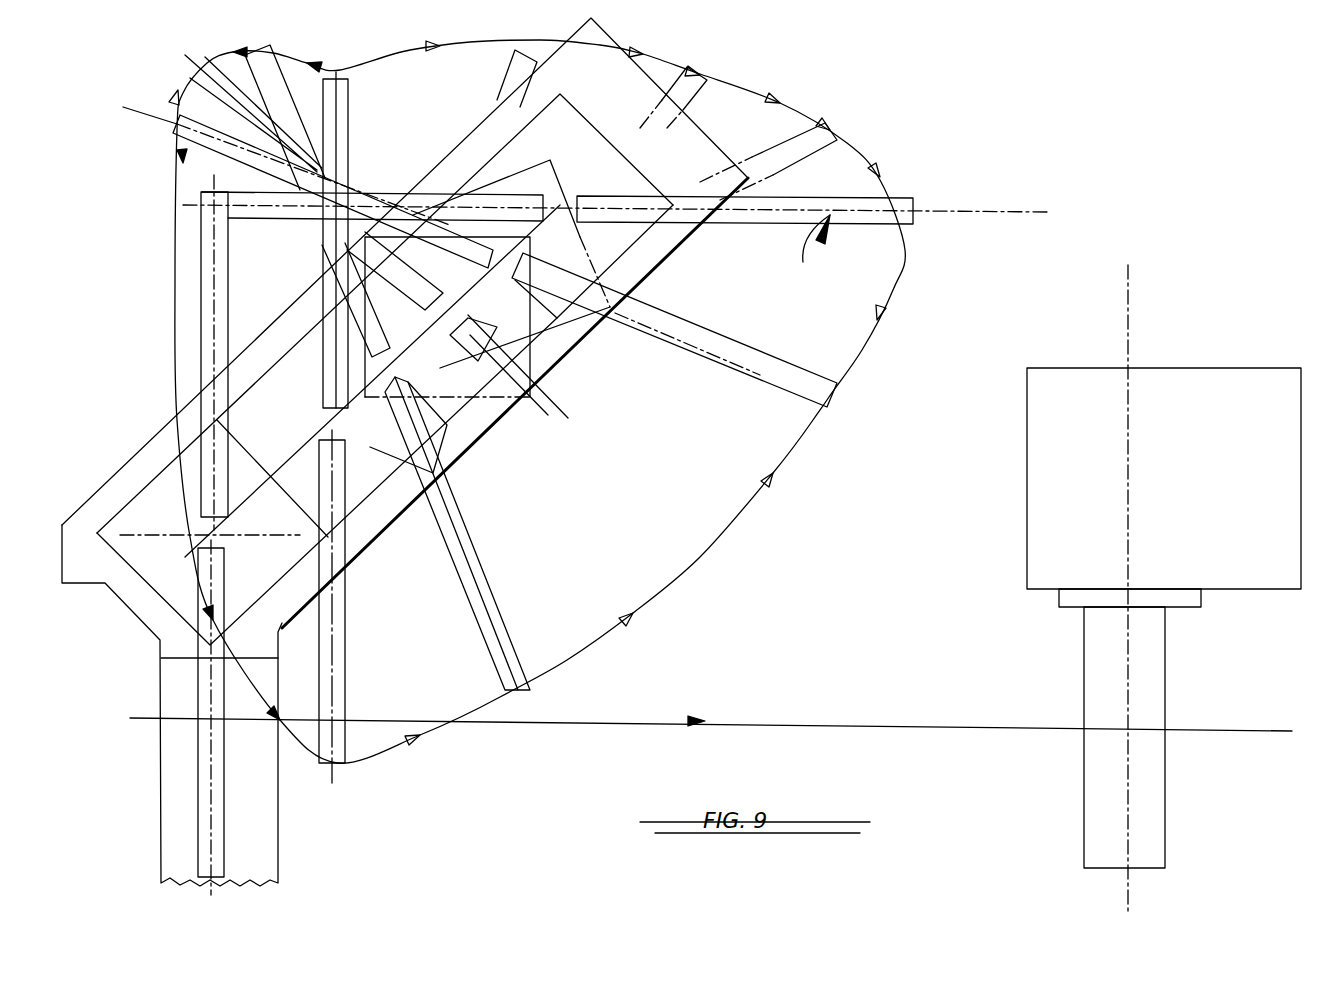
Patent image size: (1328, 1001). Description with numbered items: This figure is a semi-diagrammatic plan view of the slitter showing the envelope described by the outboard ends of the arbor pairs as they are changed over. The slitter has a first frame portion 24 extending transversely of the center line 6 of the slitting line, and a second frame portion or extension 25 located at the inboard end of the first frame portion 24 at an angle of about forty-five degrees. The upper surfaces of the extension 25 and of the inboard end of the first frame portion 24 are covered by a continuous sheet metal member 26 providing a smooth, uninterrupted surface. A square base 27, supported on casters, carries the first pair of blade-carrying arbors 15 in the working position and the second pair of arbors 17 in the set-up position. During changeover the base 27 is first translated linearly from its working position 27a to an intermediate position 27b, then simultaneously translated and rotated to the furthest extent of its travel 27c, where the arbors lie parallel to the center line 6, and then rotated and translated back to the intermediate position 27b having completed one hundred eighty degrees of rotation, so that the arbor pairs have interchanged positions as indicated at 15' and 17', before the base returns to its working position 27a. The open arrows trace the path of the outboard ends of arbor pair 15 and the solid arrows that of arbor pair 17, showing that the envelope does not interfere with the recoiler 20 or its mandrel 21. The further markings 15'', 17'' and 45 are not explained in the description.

The center line 6 is at (880, 729).
The first pair of cooperating blade-carrying arbors 15 is at (325, 662).
The interchanged position of arbor pair 15 15' is at (381, 240).
The light beam 15'' is at (171, 352).
The second pair of arbors 17 is at (276, 296).
The interchanged position of arbor pair 17 17' is at (376, 601).
The mirror 17'' is at (267, 712).
The recoiler 20 is at (1027, 482).
The mandrel 21 is at (1084, 782).
The first frame portion 24 is at (265, 848).
The second frame portion or extension 25 is at (638, 285).
The continuous sheet metal member 26 is at (673, 255).
The base 27 is at (142, 502).
The working position of the base 27a is at (292, 575).
The intermediate position of the base 27b is at (363, 508).
The furthest extent of translation of the base 27c is at (637, 167).
The rotation direction arrow 45 is at (818, 246).